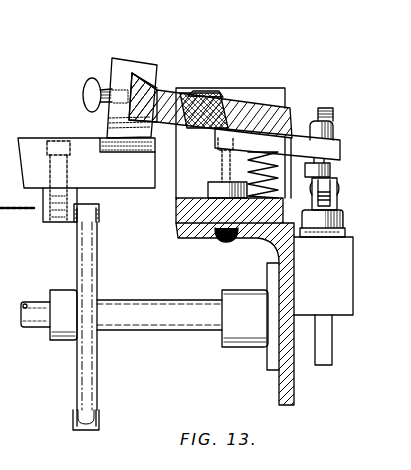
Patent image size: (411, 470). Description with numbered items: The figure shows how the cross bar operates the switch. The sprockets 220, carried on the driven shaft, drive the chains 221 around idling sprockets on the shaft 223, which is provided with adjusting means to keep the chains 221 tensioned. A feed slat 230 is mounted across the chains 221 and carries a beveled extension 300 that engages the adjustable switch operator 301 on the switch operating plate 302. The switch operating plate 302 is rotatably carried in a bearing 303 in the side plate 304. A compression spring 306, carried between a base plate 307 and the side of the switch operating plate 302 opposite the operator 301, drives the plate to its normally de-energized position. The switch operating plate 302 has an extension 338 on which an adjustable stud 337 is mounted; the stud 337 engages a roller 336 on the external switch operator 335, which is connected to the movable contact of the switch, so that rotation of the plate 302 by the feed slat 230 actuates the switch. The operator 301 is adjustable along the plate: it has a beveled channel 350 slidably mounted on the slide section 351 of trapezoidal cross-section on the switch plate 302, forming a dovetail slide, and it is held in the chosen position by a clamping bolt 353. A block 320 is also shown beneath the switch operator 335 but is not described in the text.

The feed slat 230 is at (32, 145).
The beveled extension 300 is at (127, 148).
The adjustable switch operator 301 is at (135, 50).
The slide section 351 is at (132, 73).
The beveled channel 350 is at (157, 88).
The clamping bolt 353 is at (85, 82).
The switch operating plate 302 is at (288, 110).
The bearing 303 is at (208, 88).
The plate 304 is at (263, 97).
The extension 338 is at (340, 147).
The adjustable stud 337 is at (332, 170).
The roller 336 is at (337, 182).
The external switch operator 335 is at (343, 205).
The compression spring 306 is at (248, 162).
The base plate 307 is at (175, 205).
The support block 320 is at (340, 284).
The shaft 223 is at (152, 328).
The sprocket 220 is at (88, 387).
The chain 221 is at (96, 219).